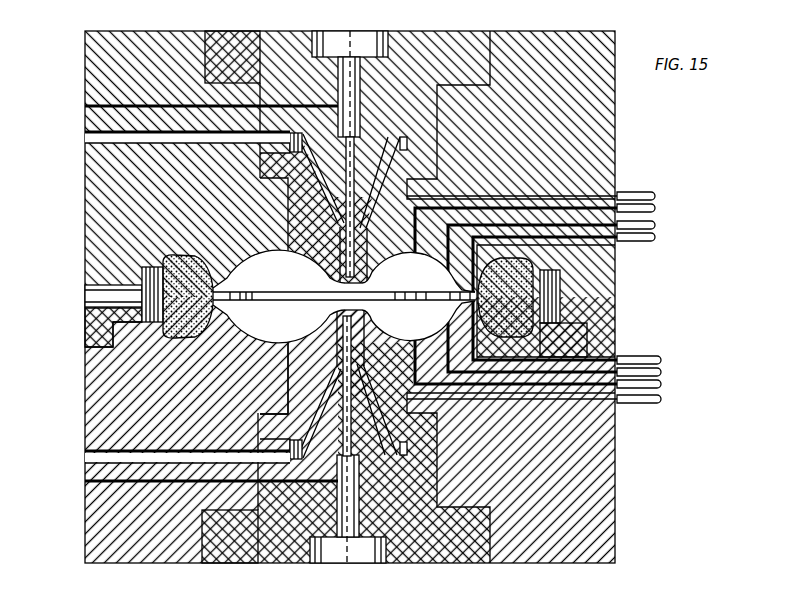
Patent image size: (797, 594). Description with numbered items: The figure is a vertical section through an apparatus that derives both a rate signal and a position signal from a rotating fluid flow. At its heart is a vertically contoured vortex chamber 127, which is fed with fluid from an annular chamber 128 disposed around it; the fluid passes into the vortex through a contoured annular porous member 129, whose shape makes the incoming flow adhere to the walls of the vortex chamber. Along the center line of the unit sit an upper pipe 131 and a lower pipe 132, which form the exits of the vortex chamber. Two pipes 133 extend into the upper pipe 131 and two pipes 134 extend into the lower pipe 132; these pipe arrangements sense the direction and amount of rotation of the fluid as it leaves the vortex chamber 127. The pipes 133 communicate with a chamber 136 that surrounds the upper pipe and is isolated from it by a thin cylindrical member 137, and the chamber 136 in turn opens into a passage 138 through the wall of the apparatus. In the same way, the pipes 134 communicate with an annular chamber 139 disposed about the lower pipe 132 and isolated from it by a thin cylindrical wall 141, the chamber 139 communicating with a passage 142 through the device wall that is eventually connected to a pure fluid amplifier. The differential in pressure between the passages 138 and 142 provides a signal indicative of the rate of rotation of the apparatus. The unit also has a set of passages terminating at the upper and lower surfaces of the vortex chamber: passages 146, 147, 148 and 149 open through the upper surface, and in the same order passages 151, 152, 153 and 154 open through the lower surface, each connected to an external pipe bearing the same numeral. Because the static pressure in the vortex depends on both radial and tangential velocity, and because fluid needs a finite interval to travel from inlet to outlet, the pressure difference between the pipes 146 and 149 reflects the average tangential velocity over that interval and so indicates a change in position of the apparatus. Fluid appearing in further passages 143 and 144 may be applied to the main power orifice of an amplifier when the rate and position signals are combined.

The vortex chamber 127 is at (258, 264).
The annular chamber 128 is at (560, 280).
The contoured annular porous member 129 is at (587, 332).
The upper pipe 131 is at (350, 168).
The lower pipe 132 is at (353, 477).
The pipes 133 is at (342, 230).
The pipes 134 is at (337, 358).
The chamber 136 is at (335, 247).
The thin cylindrical member 137 is at (333, 207).
The passage 138 is at (85, 134).
The annular chamber 139 is at (330, 366).
The thin cylindrical wall 141 is at (320, 380).
The passage 142 is at (85, 452).
The passage 143 is at (85, 106).
The passage 144 is at (85, 481).
The passage 146 is at (345, 283).
The passage 147 is at (413, 252).
The passage 148 is at (452, 262).
The passage 149 is at (477, 254).
The passage 151 is at (345, 310).
The passage 152 is at (417, 343).
The passage 153 is at (450, 330).
The passage 154 is at (494, 318).